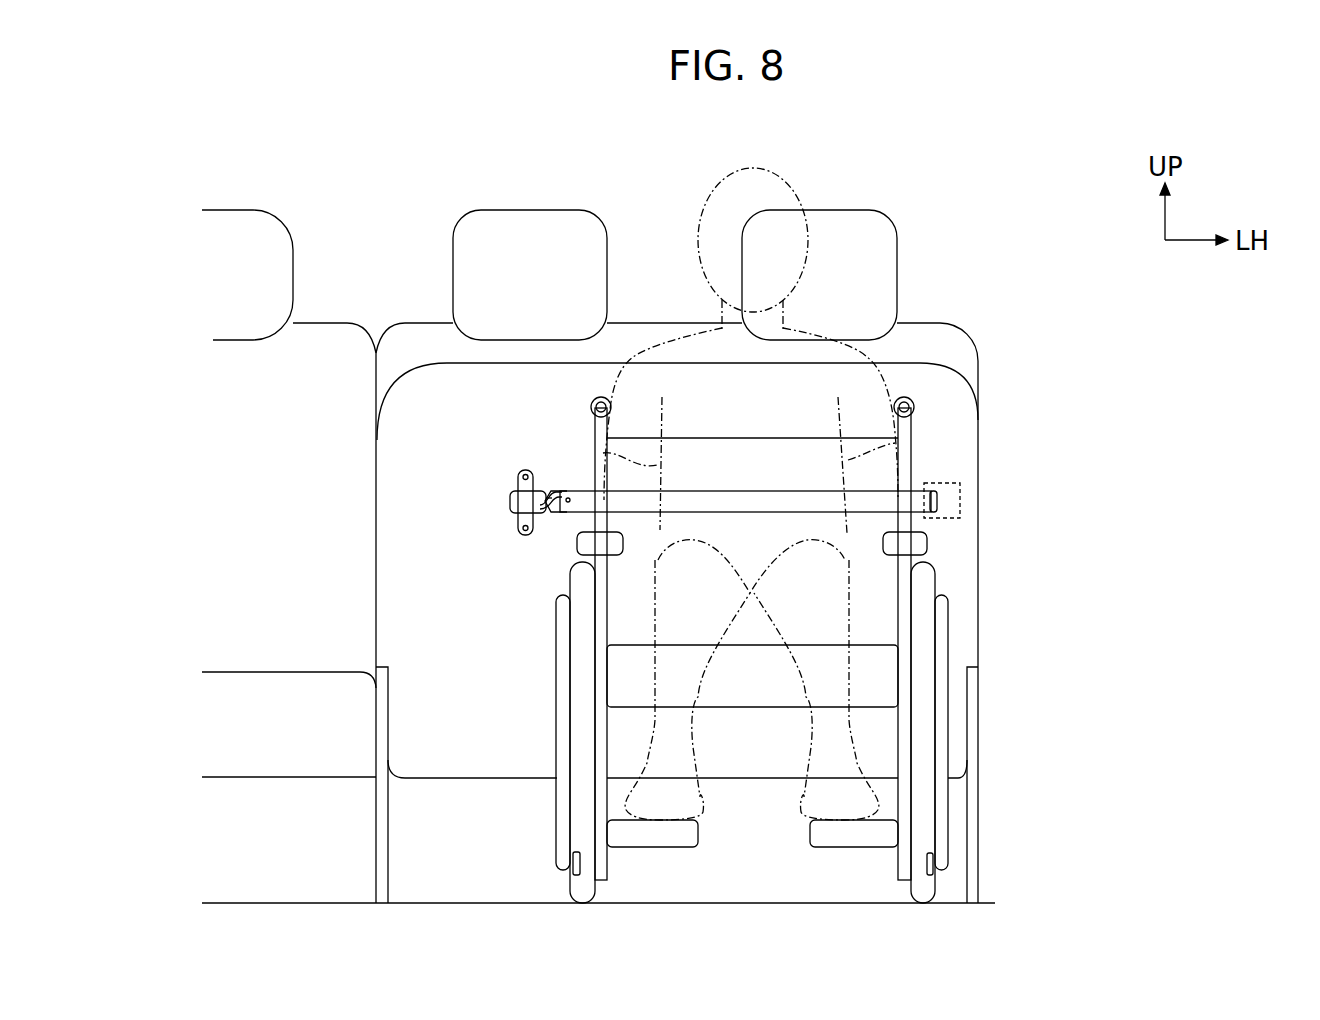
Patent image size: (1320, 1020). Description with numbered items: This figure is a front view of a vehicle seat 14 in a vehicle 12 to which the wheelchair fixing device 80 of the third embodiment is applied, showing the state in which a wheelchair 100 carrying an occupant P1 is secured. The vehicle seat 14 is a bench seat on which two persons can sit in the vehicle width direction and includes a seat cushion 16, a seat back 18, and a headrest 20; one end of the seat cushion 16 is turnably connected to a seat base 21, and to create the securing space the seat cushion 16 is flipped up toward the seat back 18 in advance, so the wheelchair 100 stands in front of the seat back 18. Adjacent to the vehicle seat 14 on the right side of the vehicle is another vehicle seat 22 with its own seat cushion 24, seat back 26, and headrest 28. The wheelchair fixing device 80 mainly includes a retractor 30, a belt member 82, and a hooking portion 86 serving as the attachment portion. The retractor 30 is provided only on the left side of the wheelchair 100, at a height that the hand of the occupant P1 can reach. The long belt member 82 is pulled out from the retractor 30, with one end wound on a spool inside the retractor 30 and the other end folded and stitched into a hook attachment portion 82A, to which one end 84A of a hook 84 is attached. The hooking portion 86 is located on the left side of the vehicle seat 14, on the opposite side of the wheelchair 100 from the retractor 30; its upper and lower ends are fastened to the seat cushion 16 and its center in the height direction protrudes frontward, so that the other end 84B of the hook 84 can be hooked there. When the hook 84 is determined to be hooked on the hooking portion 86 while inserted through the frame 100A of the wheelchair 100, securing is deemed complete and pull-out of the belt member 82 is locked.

The vehicle 12 is at (735, 545).
The vehicle seat 14 is at (735, 545).
The seat cushion 16 is at (940, 368).
The seat back 18 is at (978, 364).
The headrest 20 is at (457, 222).
The seat base 21 is at (978, 762).
The vehicle seat 22 is at (335, 316).
The seat cushion 24 is at (268, 670).
The seat back 26 is at (366, 330).
The headrest 28 is at (231, 210).
The retractor 30 is at (962, 500).
The wheelchair fixing device 80 is at (797, 485).
The belt member 82 is at (784, 525).
The hook attachment portion 82A is at (573, 518).
The hook 84 is at (499, 480).
The one end of hook 84A is at (547, 485).
The other end of hook 84B is at (513, 508).
The hooking portion 86 is at (523, 457).
The wheelchair 100 is at (822, 582).
The frame 100A is at (607, 473).
The occupant P1 is at (700, 210).